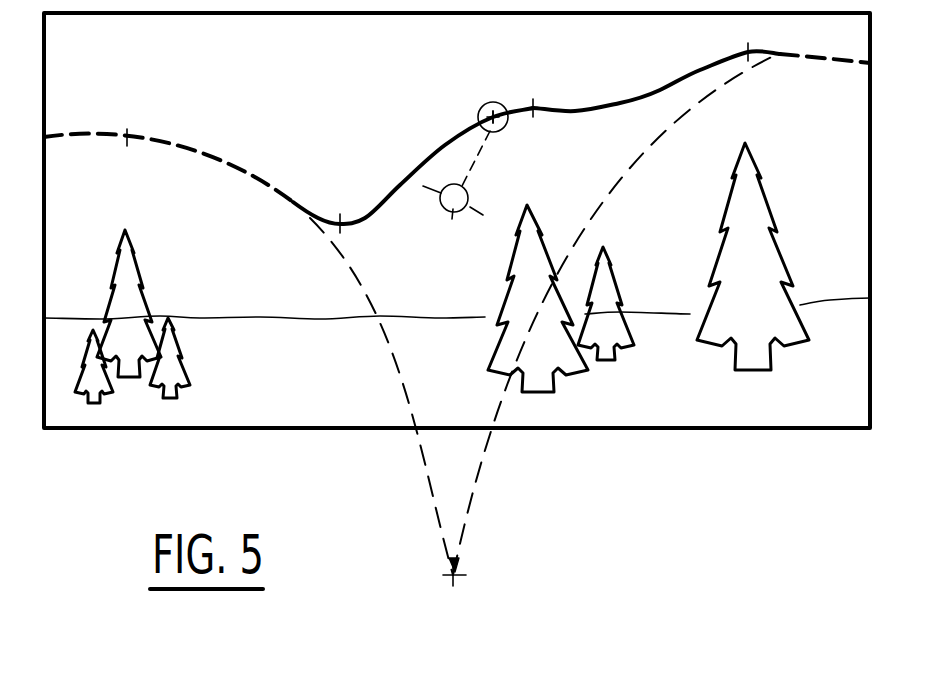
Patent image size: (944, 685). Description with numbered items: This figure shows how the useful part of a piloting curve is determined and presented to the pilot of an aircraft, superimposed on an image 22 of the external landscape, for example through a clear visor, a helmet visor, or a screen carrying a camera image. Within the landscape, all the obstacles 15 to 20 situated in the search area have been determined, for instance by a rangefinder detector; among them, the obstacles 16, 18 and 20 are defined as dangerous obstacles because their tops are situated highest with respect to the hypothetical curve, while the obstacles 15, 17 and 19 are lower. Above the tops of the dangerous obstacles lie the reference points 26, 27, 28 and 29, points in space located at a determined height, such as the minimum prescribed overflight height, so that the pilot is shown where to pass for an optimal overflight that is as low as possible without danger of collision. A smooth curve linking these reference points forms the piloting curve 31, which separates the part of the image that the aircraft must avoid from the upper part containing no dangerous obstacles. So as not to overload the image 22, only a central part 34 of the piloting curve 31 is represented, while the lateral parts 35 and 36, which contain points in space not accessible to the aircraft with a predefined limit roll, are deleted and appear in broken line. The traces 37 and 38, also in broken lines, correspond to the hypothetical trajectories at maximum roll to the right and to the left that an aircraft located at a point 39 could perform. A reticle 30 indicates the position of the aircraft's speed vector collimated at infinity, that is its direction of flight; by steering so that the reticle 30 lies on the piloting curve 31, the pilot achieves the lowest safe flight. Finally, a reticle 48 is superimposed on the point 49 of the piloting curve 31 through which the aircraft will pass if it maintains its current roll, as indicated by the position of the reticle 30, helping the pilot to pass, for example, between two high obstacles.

The obstacle 15 is at (83, 357).
The dangerous obstacle 16 is at (137, 273).
The obstacle 17 is at (178, 347).
The dangerous obstacle 18 is at (525, 278).
The obstacle 19 is at (612, 262).
The dangerous obstacle 20 is at (775, 268).
The image of the external landscape 22 is at (790, 430).
The reference point 26 is at (128, 136).
The reference point 27 is at (340, 215).
The reference point 28 is at (531, 105).
The reference point 29 is at (745, 52).
The reticle 30 is at (457, 221).
The piloting curve 31 is at (428, 160).
The central part of the piloting curve 34 is at (572, 108).
The lateral part of the piloting curve 35 is at (812, 62).
The lateral part of the piloting curve 36 is at (210, 157).
The trace 37 is at (478, 487).
The trace 38 is at (423, 458).
The point 39 is at (452, 580).
The reticle 48 is at (480, 110).
The point of the piloting curve 49 is at (503, 128).